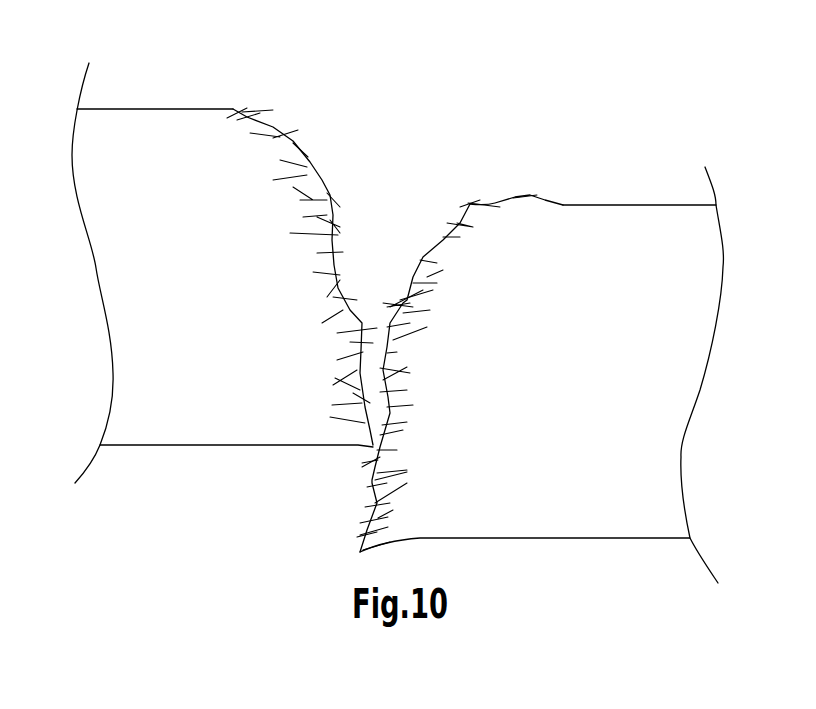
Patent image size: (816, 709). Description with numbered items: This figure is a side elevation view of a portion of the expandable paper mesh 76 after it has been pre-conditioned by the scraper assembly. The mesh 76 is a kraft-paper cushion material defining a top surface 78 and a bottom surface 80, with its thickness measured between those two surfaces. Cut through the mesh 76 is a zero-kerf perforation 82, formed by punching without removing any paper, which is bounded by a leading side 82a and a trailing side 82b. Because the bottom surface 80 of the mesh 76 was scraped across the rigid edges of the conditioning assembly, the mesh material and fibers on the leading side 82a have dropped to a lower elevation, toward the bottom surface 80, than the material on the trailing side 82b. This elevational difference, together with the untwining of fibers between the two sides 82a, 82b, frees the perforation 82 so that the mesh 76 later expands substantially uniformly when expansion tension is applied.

The expandable paper mesh 76 is at (397, 314).
The top surface 78 is at (188, 108).
The bottom surface 80 is at (227, 445).
The perforation 82 is at (382, 236).
The leading side 82a is at (566, 394).
The trailing side 82b is at (216, 286).